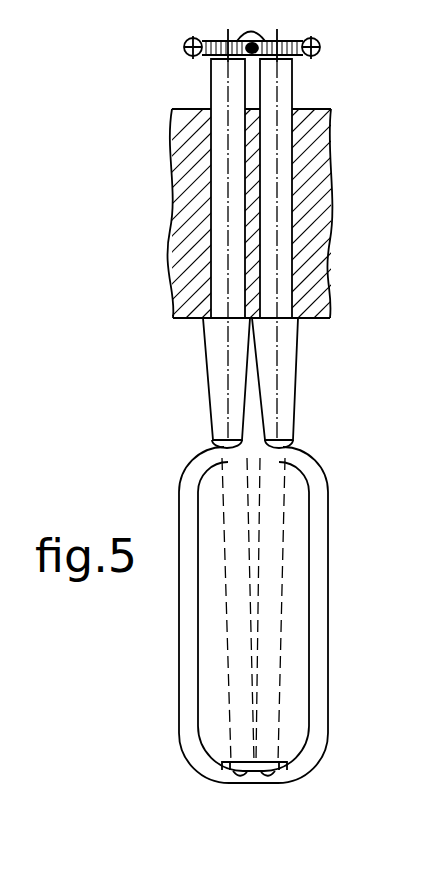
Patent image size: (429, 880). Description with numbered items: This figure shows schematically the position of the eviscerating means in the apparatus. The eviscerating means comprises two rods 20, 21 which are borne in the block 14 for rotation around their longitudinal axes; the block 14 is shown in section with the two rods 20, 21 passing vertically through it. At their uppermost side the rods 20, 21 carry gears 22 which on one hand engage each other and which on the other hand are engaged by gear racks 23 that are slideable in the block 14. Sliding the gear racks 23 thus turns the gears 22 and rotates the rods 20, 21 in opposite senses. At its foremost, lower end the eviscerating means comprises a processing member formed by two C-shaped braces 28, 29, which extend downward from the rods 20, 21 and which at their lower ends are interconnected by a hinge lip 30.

The block 14 is at (316, 215).
The rod 20 is at (287, 88).
The rod 21 is at (218, 84).
The gears 22 is at (252, 27).
The gear racks 23 is at (362, 47).
The C-shaped brace 28 is at (310, 462).
The C-shaped brace 29 is at (198, 460).
The hinge lip 30 is at (253, 772).